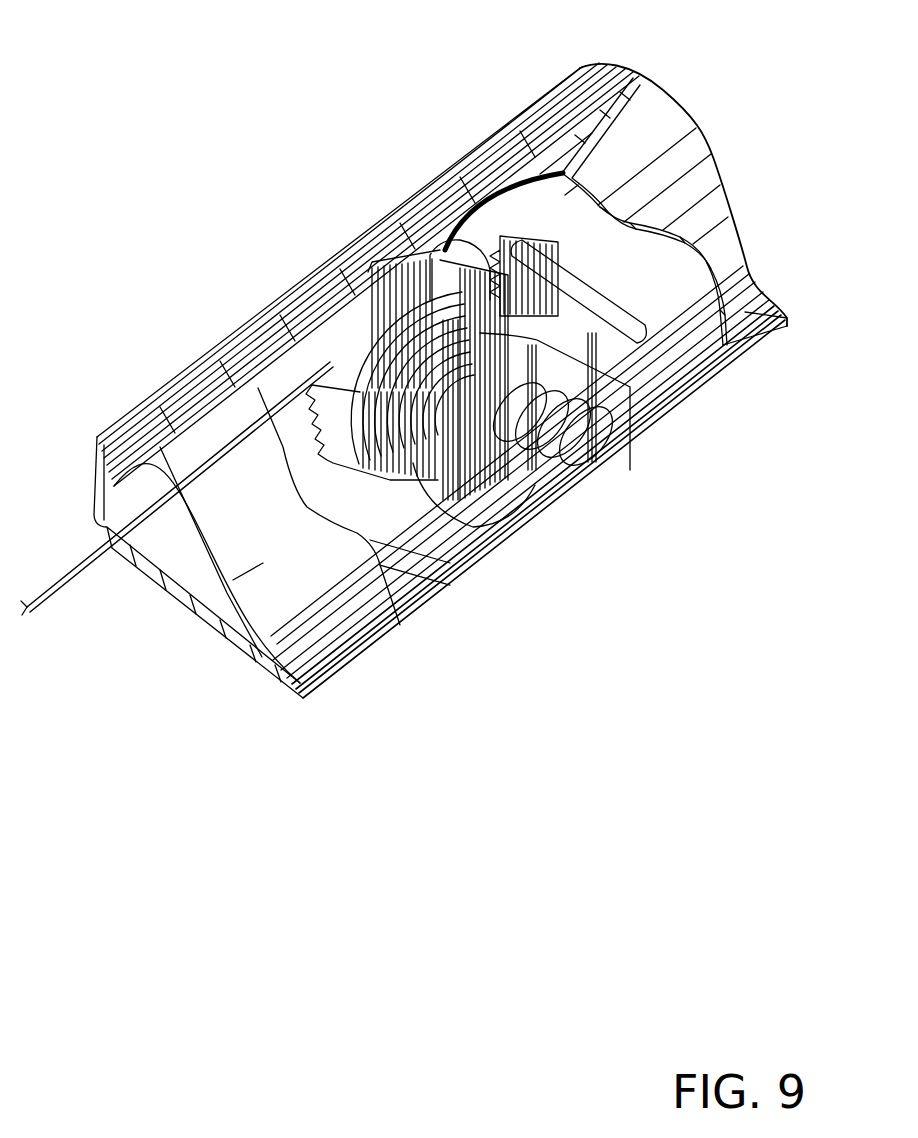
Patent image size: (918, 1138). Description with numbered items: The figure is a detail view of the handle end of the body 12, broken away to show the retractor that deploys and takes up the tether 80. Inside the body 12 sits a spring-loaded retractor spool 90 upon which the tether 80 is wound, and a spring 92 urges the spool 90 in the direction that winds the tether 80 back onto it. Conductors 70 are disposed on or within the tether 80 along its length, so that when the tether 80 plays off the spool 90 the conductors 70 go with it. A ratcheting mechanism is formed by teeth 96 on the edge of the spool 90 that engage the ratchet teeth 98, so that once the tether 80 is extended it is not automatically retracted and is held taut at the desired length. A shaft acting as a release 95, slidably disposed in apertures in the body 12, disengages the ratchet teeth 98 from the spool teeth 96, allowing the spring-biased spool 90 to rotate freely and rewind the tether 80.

The body 12 is at (565, 90).
The conductors 70 is at (520, 175).
The tether 80 is at (43, 593).
The retractor spool 90 is at (493, 490).
The spring 92 is at (587, 407).
The release 95 is at (640, 333).
The spool teeth 96 is at (335, 320).
The ratchet teeth 98 is at (527, 240).